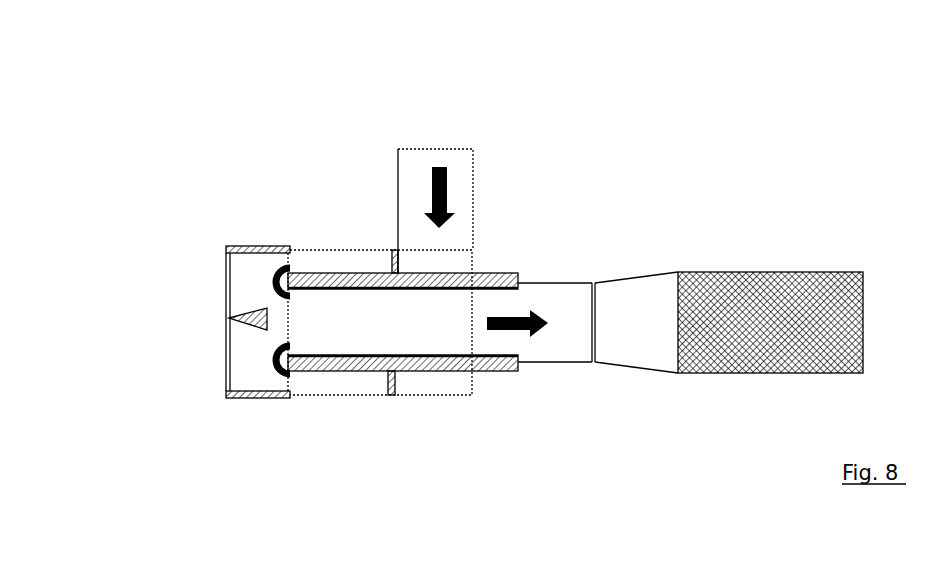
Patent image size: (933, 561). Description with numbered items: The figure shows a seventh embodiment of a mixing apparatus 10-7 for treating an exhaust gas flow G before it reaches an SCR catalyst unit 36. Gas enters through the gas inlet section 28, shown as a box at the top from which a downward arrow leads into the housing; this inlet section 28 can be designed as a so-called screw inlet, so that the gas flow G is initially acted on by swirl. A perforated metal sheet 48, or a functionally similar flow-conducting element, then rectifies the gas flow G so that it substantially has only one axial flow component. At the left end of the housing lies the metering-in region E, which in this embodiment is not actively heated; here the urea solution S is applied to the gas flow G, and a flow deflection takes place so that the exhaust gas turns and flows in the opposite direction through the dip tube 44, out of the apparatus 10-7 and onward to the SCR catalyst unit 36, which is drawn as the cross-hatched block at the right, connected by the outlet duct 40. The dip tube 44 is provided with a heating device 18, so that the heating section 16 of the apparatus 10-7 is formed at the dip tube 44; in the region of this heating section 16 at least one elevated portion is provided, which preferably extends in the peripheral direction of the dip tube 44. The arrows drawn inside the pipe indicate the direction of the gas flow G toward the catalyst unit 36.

The mixing apparatus 10-7 is at (498, 275).
The heating section 16 is at (461, 384).
The heating device 18 is at (330, 372).
The gas inlet section 28 is at (476, 183).
The SCR catalyst unit 36 is at (755, 272).
The outlet duct 40 is at (582, 363).
The dip tube 44 is at (365, 352).
The perforated metal sheet 48 is at (394, 376).
The gas flow G is at (267, 275).
The sample S is at (247, 312).
The metering-in region E is at (257, 423).